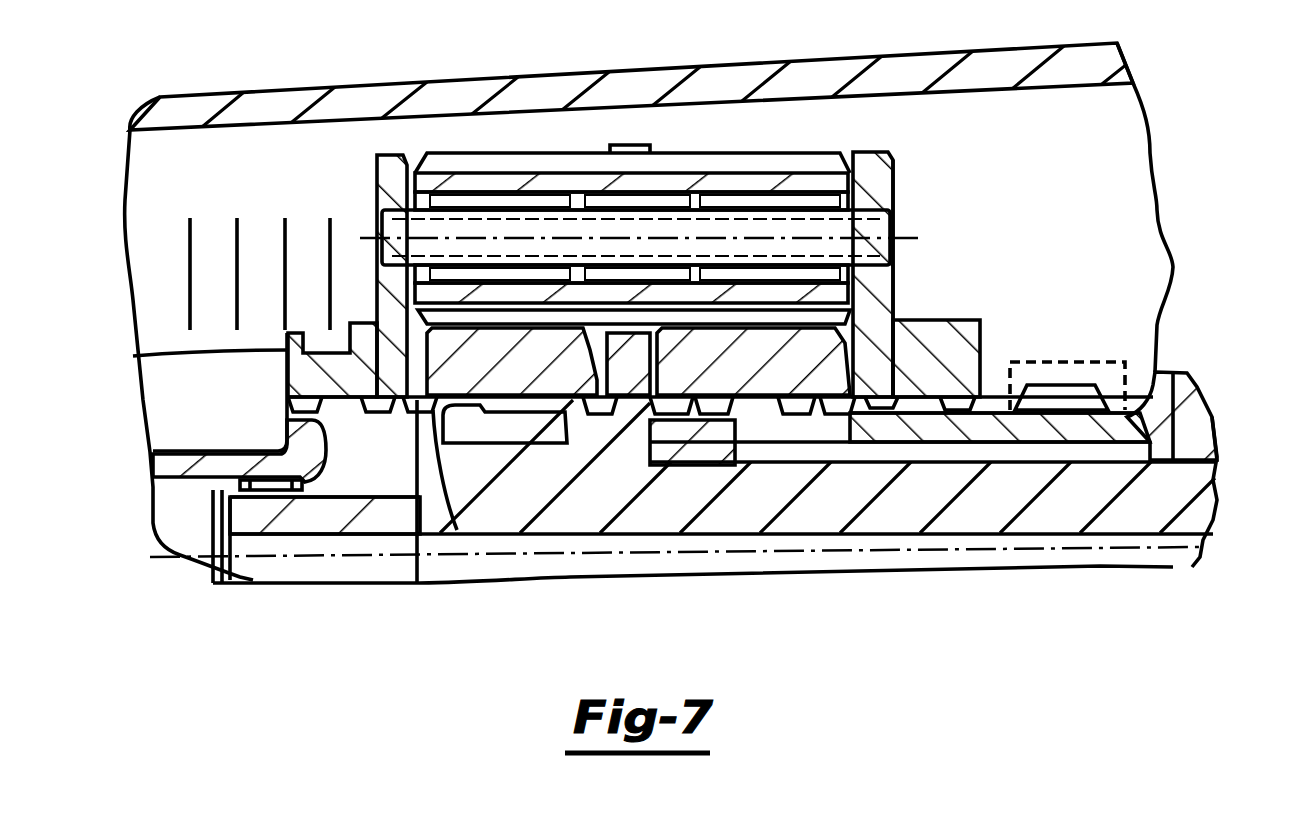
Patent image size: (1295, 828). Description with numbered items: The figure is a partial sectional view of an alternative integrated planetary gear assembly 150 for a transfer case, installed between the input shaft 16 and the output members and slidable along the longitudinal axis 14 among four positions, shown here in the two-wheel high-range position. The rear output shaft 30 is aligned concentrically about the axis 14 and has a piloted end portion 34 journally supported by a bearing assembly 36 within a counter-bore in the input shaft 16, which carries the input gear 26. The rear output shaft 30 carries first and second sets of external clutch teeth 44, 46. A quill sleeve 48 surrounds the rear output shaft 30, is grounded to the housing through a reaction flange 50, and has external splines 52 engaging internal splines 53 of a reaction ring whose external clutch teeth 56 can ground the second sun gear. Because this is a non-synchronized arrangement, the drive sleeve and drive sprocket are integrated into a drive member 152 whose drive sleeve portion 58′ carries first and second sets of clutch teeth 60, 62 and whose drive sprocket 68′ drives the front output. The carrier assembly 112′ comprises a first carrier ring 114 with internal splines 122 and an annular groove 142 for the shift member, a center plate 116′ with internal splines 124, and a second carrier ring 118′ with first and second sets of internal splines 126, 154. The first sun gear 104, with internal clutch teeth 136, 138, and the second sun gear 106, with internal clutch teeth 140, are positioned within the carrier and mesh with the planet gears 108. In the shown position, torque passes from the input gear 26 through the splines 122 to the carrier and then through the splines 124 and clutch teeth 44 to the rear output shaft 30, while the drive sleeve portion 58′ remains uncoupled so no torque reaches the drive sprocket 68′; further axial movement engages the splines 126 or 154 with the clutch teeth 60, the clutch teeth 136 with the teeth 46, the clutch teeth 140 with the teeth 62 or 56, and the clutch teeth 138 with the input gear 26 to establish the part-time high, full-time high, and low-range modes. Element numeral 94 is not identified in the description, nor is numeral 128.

The longitudinal axis 14 is at (1195, 572).
The input shaft 16 is at (160, 460).
The input gear 26 is at (290, 419).
The rear output shaft 30 is at (605, 440).
The piloted end portion 34 is at (266, 523).
The bearing assembly 36 is at (280, 497).
The first set of external clutch teeth 44 is at (585, 415).
The second set of external clutch teeth 46 is at (452, 408).
The quill sleeve 48 is at (845, 425).
The reaction flange 50 is at (1157, 418).
The external splines 52 is at (795, 428).
The internal splines 53 is at (660, 420).
The external clutch teeth 56 is at (760, 435).
The drive sleeve portion 58′ is at (1080, 420).
The first set of external clutch teeth 60 is at (1000, 460).
The second set of external clutch teeth 62 is at (800, 430).
The drive sprocket 68′ is at (1063, 403).
The spring 94 is at (1068, 385).
The first sun gear 104 is at (512, 361).
The second sun gear 106 is at (728, 361).
The first set of planet gears 108 is at (856, 157).
The carrier assembly 112′ is at (845, 122).
The first carrier ring 114 is at (385, 157).
The center plate 116′ is at (633, 144).
The second carrier ring 118′ is at (895, 178).
The internal splines 122 is at (353, 407).
The internal splines 124 is at (640, 412).
The first set of internal splines 126 is at (877, 400).
The shaft 128 is at (640, 236).
The first set of internal clutch teeth 136 is at (540, 410).
The second set of internal clutch teeth 138 is at (417, 560).
The internal clutch teeth 140 is at (895, 430).
The annular groove 142 is at (287, 342).
The integrated planetary gear assembly 150 is at (750, 138).
The drive member 152 is at (1085, 443).
The second set of internal splines 154 is at (957, 393).